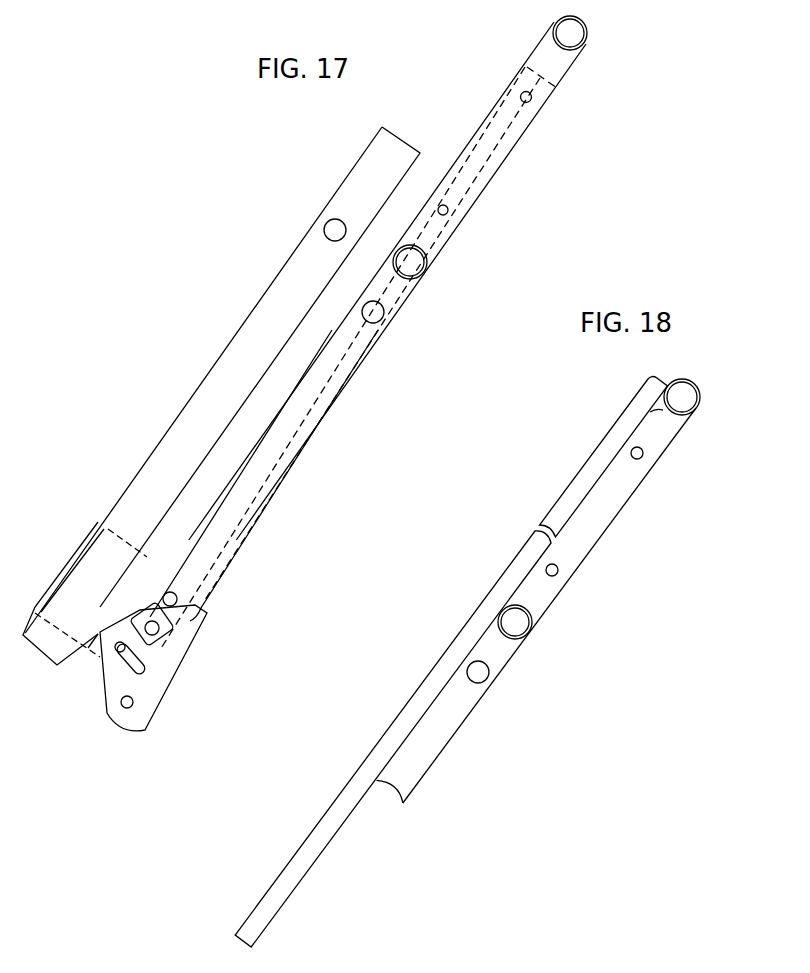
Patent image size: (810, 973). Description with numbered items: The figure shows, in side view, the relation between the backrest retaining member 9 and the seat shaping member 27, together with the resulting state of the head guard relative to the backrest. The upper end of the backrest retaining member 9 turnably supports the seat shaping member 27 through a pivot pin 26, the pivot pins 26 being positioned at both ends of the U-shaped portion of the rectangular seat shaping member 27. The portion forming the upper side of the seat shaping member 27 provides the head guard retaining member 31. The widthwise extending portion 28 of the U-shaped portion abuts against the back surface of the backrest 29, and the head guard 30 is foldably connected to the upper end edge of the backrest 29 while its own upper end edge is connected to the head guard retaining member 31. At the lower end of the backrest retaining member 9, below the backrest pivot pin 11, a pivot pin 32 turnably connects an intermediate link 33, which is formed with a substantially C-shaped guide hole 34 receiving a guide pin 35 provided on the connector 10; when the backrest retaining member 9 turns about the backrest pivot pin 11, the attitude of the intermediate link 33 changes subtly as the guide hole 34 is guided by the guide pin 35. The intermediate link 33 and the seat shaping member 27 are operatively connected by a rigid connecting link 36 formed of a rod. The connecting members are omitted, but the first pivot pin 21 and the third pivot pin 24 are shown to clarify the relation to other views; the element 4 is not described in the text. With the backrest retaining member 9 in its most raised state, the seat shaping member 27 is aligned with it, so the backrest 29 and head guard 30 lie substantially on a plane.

In FIG. 17, the mounting plate 4 is at (222, 380).
In FIG. 17, the backrest retaining member 9 is at (353, 358).
In FIG. 18, the backrest retaining member 9 is at (484, 704).
In FIG. 17, the connector 10 is at (88, 648).
In FIG. 17, the backrest pivot pin 11 is at (176, 598).
In FIG. 17, the first pivot pin 21 is at (381, 314).
In FIG. 18, the first pivot pin 21 is at (489, 673).
In FIG. 17, the third pivot pin 24 is at (328, 226).
In FIG. 17, the pivot pin 26 is at (533, 98).
In FIG. 18, the pivot pin 26 is at (644, 455).
In FIG. 17, the seat shaping member 27 is at (417, 278).
In FIG. 18, the seat shaping member 27 is at (579, 591).
In FIG. 17, the widthwise extending portion 28 is at (426, 262).
In FIG. 18, the widthwise extending portion 28 is at (530, 622).
In FIG. 18, the backrest 29 is at (438, 682).
In FIG. 18, the head guard 30 is at (592, 467).
In FIG. 17, the head guard retaining member 31 is at (588, 35).
In FIG. 18, the head guard retaining member 31 is at (690, 398).
In FIG. 17, the pivot pin 32 is at (159, 627).
In FIG. 17, the intermediate link 33 is at (162, 669).
In FIG. 17, the guide hole 34 is at (145, 670).
In FIG. 17, the guide pin 35 is at (112, 640).
In FIG. 17, the connecting link 36 is at (222, 573).
In FIG. 18, the connecting link 36 is at (559, 572).